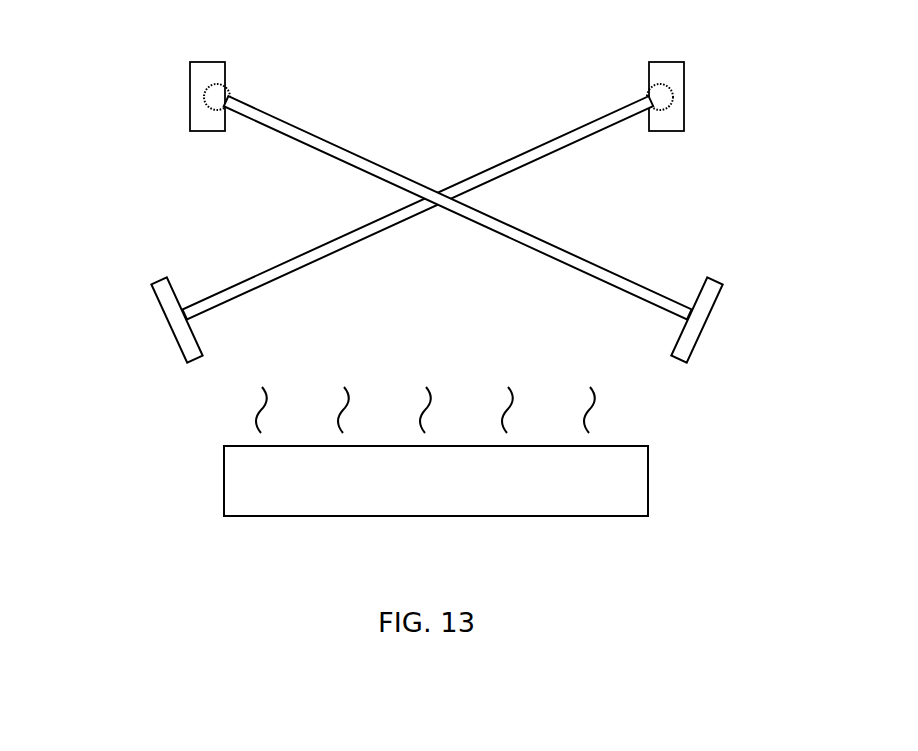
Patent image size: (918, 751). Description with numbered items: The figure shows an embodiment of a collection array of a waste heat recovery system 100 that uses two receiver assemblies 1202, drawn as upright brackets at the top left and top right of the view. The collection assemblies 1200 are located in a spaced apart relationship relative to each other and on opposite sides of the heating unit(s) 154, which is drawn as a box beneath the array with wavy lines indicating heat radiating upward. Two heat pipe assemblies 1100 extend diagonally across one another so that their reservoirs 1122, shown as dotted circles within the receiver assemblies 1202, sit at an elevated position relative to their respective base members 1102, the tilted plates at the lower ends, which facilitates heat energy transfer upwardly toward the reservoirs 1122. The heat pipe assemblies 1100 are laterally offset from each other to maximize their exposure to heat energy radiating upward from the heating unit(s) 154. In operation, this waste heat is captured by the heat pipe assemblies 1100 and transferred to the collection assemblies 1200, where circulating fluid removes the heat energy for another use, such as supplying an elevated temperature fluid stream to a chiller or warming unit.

The heating system 100 is at (594, 542).
The heating unit 154 is at (648, 491).
The heat pipe assembly 1100 is at (318, 137).
The base member 1102 is at (157, 310).
The reservoir 1122 is at (203, 84).
The collection assembly 1200 is at (80, 379).
The receiver assembly 1202 is at (190, 119).